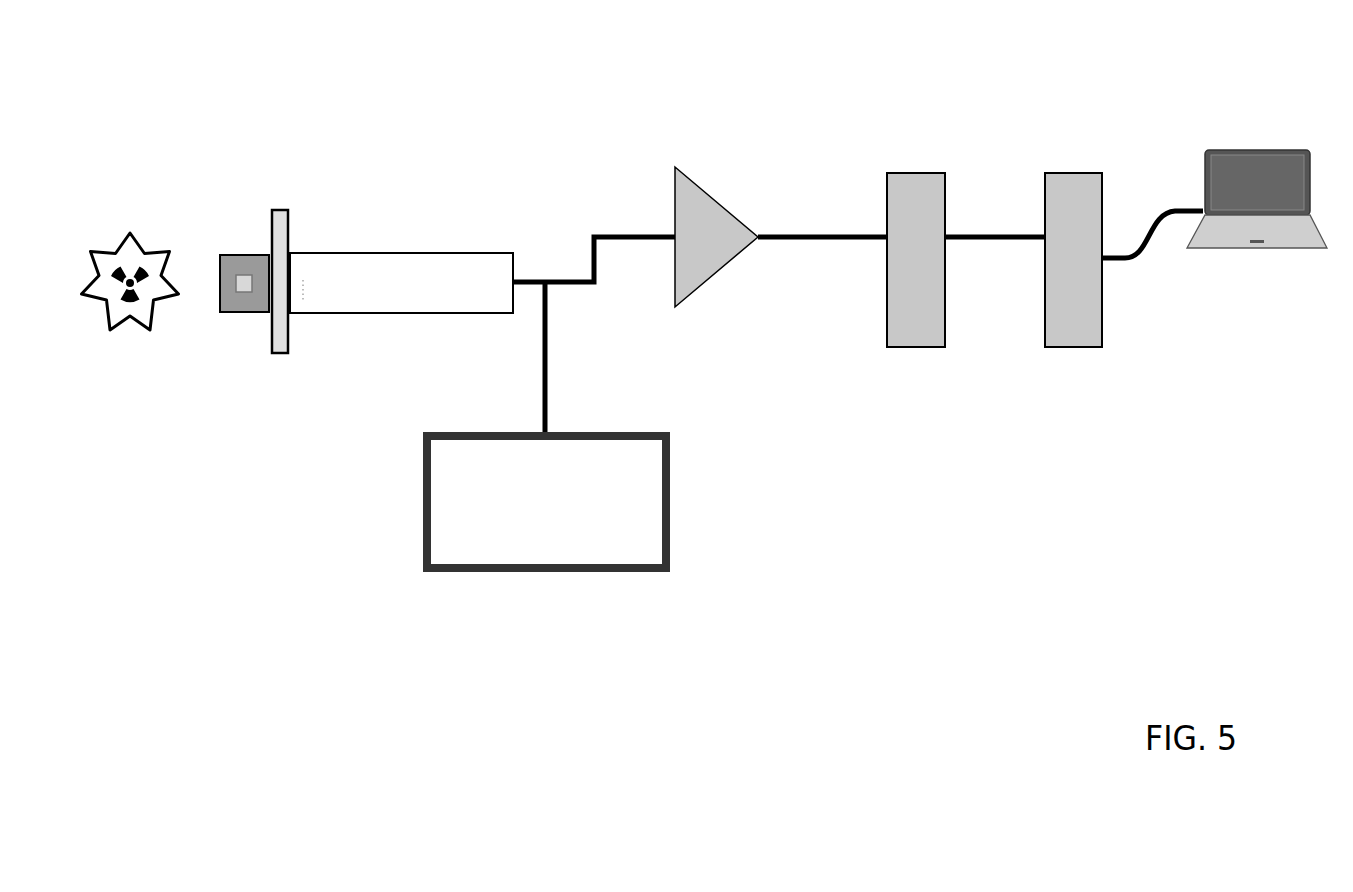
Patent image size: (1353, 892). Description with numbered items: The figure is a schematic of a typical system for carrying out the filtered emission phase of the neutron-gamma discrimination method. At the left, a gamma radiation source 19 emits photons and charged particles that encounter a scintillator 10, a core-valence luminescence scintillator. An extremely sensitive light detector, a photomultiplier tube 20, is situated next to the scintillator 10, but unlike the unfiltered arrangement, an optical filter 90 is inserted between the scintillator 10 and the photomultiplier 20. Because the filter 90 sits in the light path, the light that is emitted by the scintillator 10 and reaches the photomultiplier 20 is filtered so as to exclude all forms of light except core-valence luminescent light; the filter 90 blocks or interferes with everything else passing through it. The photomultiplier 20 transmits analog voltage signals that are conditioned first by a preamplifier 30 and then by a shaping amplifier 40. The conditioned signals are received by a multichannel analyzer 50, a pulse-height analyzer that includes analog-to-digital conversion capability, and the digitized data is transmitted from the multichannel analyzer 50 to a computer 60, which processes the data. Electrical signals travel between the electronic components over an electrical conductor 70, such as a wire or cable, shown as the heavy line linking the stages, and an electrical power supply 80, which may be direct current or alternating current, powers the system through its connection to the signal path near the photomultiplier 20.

The gamma radiation source 19 is at (132, 330).
The scintillator 10 is at (243, 313).
The optical filter 90 is at (280, 210).
The photomultiplier tube 20 is at (452, 187).
The electrical conductor 70 is at (818, 232).
The electrical power supply 80 is at (546, 425).
The preamplifier 30 is at (717, 270).
The shaping amplifier 40 is at (920, 348).
The multichannel analyzer 50 is at (1075, 173).
The computer 60 is at (1287, 295).